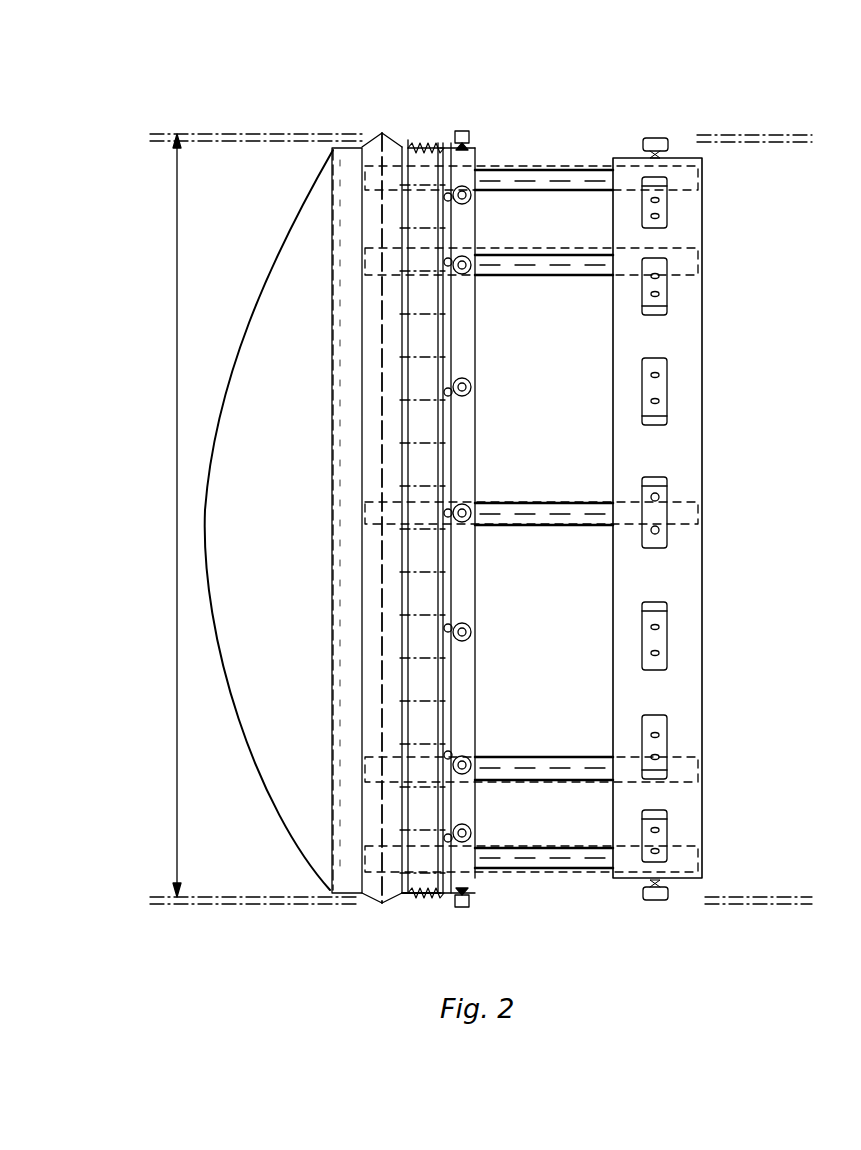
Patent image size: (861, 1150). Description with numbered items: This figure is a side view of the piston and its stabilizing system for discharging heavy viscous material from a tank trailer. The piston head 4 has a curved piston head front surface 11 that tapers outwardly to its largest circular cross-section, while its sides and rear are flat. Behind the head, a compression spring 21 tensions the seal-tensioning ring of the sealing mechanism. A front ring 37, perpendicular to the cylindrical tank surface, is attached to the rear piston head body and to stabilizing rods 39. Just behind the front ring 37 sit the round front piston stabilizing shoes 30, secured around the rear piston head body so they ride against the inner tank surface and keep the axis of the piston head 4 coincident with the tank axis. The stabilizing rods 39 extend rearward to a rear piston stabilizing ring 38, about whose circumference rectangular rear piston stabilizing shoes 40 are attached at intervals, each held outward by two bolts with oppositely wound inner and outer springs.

The piston head 4 is at (287, 365).
The piston head front surface 11 is at (205, 508).
The compression spring 21 is at (410, 893).
The front piston stabilizing shoes 30 is at (465, 262).
The front ring 37 is at (432, 183).
The rear piston stabilizing ring 38 is at (680, 217).
The stabilizing rods 39 is at (557, 178).
The rear piston stabilizing shoes 40 is at (657, 393).